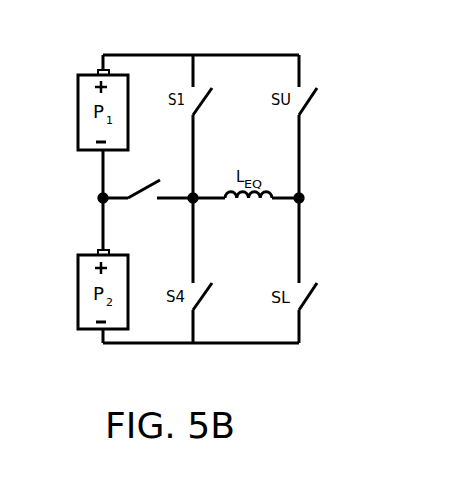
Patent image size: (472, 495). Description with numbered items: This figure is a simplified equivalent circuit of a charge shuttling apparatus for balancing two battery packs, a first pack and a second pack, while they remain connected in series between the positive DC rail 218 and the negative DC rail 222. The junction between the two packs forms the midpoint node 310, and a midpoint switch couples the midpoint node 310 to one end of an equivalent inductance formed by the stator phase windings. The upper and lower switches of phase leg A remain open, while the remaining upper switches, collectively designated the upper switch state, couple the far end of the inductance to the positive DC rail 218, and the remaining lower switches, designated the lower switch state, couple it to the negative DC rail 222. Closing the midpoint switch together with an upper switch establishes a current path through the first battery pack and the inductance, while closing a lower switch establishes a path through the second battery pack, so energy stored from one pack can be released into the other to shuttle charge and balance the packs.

The positive DC rail 218 is at (143, 54).
The negative DC rail 222 is at (143, 344).
The midpoint node 310 is at (72, 198).